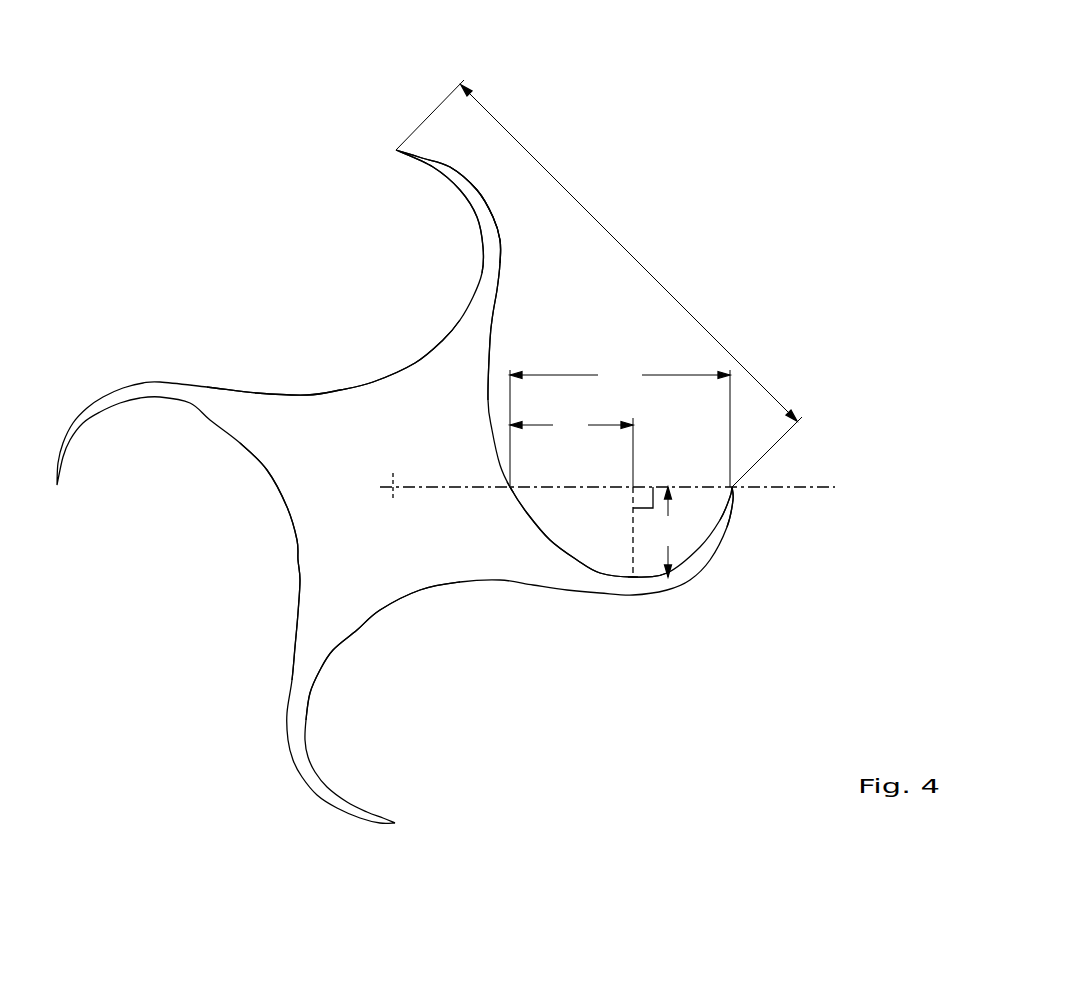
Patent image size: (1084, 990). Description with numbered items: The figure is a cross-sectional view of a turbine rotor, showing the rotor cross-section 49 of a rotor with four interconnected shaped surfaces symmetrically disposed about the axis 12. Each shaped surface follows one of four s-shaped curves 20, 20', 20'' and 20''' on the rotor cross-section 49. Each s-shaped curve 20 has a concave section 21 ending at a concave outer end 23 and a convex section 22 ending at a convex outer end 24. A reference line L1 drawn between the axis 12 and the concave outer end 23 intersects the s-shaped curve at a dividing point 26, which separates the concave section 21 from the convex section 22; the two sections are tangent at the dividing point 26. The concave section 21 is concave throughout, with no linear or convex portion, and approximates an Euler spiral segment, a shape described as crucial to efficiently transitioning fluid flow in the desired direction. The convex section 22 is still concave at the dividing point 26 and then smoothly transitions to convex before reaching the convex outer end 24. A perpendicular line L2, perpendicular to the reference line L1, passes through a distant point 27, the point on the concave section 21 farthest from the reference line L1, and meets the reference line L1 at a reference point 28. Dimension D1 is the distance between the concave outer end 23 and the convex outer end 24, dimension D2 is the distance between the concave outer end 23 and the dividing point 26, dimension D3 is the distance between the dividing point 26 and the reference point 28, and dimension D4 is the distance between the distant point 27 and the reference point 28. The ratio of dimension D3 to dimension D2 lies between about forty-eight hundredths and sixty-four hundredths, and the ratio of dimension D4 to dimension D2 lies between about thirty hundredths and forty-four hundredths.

The rotor cross-section 49 is at (240, 662).
The convex outer end 24 is at (396, 150).
The convex section 22 is at (500, 237).
The s-shaped curve 20 is at (534, 320).
The s-shaped curve 20''' is at (327, 298).
The s-shaped curve 20'' is at (223, 561).
The s-shaped curve 20' is at (383, 656).
The concave section 21 is at (562, 560).
The concave outer end 23 is at (732, 487).
The dividing point 26 is at (510, 487).
The distant point 27 is at (633, 577).
The reference point 28 is at (633, 487).
The axis 12 is at (393, 487).
The reference line L1 is at (483, 487).
The perpendicular line L2 is at (633, 572).
The dimension D1 is at (599, 283).
The dimension D2 is at (620, 425).
The dimension D3 is at (571, 450).
The dimension D4 is at (668, 532).